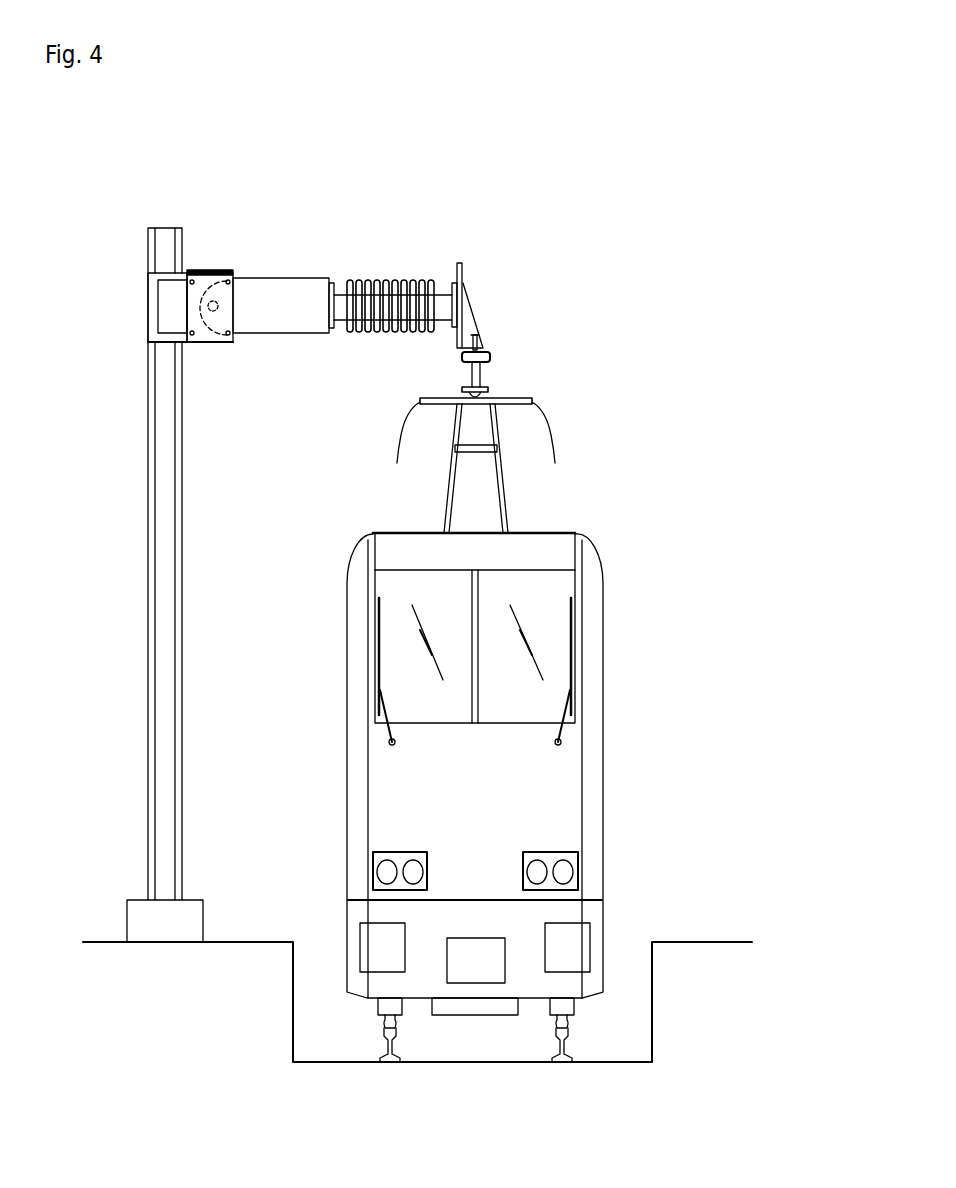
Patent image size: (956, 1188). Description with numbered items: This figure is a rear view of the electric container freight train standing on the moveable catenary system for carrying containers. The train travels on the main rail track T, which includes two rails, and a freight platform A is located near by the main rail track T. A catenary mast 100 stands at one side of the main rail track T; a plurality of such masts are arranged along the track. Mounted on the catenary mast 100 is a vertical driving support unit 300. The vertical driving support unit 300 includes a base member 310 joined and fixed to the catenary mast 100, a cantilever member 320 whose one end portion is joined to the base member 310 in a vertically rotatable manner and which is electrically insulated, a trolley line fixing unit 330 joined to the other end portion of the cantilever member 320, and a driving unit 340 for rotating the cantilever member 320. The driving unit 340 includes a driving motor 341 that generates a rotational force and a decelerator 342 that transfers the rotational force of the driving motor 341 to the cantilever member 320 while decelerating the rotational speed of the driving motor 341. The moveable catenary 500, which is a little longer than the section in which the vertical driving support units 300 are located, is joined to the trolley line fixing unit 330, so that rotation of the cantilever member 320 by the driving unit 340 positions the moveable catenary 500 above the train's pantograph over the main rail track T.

The catenary mast 100 is at (138, 548).
The vertical driving support unit 300 is at (432, 136).
The base member 310 is at (176, 254).
The cantilever member 320 is at (284, 252).
The trolley line fixing unit 330 is at (448, 246).
The driving unit 340 is at (212, 252).
The driving motor 341 is at (163, 319).
The decelerator 342 is at (196, 344).
The moveable catenary 500 is at (512, 357).
The main rail track T is at (366, 1030).
The freight platform A is at (417, 986).